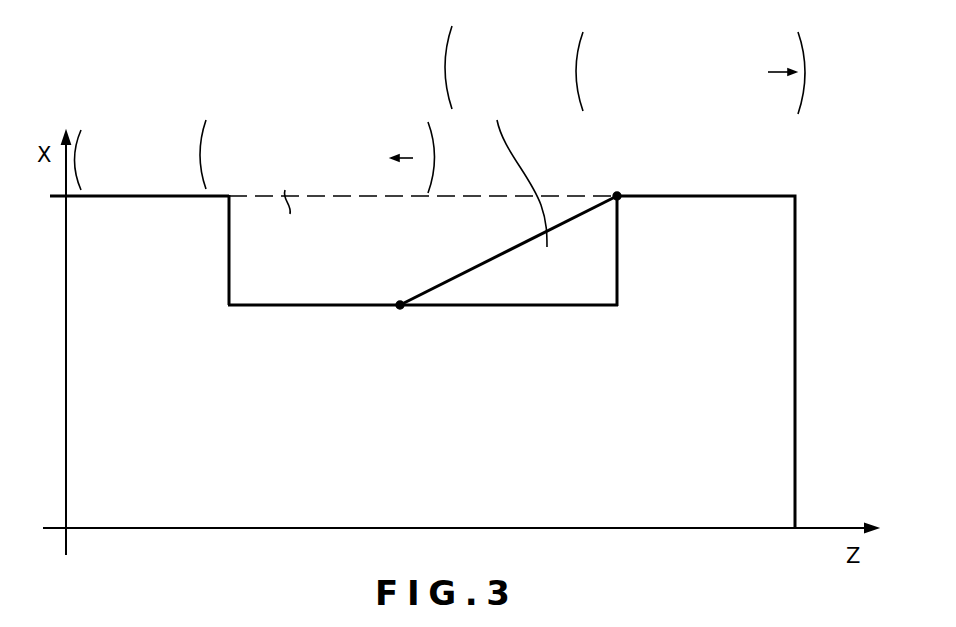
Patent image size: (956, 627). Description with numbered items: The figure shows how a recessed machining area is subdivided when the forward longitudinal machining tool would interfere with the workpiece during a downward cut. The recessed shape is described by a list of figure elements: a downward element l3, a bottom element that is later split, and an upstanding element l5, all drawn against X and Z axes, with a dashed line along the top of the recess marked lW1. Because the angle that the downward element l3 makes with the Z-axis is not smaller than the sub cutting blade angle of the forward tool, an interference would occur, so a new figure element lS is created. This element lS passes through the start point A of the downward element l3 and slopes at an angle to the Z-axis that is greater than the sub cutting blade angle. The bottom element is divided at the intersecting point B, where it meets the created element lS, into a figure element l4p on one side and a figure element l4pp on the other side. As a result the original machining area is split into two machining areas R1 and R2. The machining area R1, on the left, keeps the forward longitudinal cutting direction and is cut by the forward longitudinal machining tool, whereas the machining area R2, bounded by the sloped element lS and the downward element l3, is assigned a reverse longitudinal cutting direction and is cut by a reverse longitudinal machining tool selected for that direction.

The machining area R1 is at (255, 157).
The machining area R2 is at (612, 136).
The figure element l5 is at (213, 250).
The figure element l4pp is at (314, 319).
The figure element l4p is at (509, 319).
The figure element l3 is at (630, 251).
The figure element lS is at (508, 250).
The workpiece surface length (dashed) lW1 is at (423, 211).
The start point A is at (619, 193).
The intersecting point B is at (401, 308).